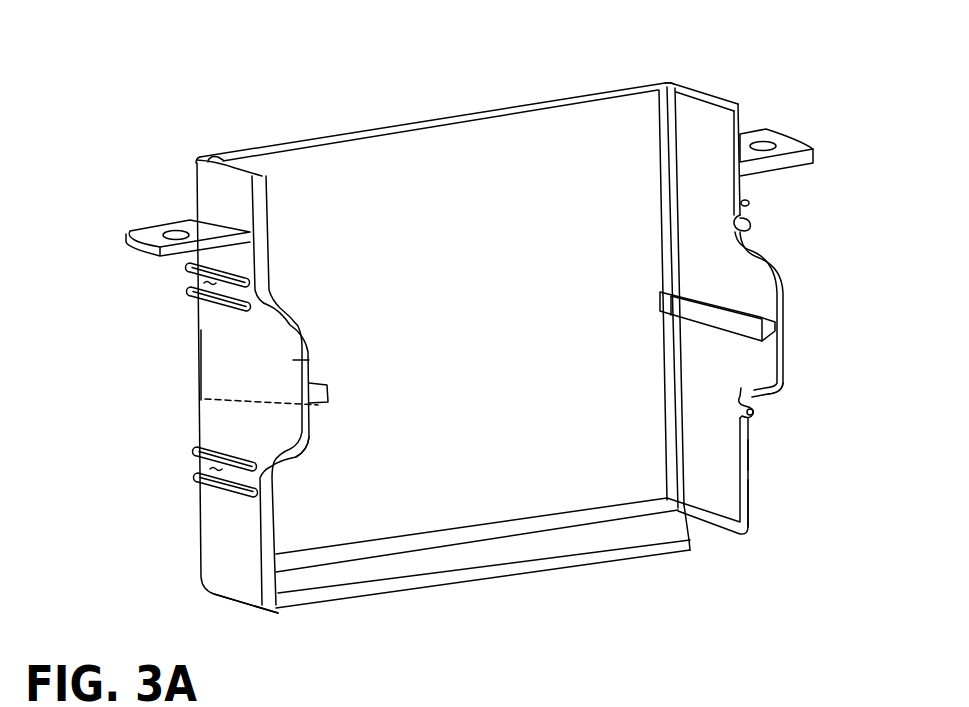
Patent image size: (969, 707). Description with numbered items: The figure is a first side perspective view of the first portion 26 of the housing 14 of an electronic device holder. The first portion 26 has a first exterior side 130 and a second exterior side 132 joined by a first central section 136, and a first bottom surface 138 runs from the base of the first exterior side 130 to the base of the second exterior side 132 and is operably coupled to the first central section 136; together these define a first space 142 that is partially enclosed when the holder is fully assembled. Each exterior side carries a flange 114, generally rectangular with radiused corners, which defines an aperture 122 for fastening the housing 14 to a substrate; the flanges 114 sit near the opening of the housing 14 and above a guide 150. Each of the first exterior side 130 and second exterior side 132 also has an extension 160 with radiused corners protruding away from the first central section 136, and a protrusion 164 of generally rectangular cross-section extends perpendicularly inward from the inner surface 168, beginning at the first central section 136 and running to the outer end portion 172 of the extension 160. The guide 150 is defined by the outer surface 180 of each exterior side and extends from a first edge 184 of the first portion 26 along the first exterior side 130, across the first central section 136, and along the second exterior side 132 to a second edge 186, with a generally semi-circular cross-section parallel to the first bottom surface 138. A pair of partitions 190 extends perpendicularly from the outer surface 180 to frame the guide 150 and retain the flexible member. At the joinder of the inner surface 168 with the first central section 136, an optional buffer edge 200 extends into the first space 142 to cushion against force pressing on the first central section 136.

The housing 14 is at (251, 92).
The first portion 26 is at (208, 131).
The flange 114 is at (817, 153).
The aperture 122 is at (773, 138).
The first exterior side 130 is at (227, 380).
The second exterior side 132 is at (730, 283).
The first central section 136 is at (583, 133).
The first bottom surface 138 is at (485, 553).
The first space 142 is at (381, 126).
The guide 150 is at (740, 220).
The extension 160 is at (749, 353).
The protrusion 164 is at (743, 330).
The inner surface 168 is at (750, 297).
The outer end portion 172 is at (783, 379).
The outer surface 180 is at (752, 452).
The first edge 184 is at (277, 557).
The second edge 186 is at (747, 480).
The partition 190 is at (750, 204).
The buffer edge 200 is at (663, 130).